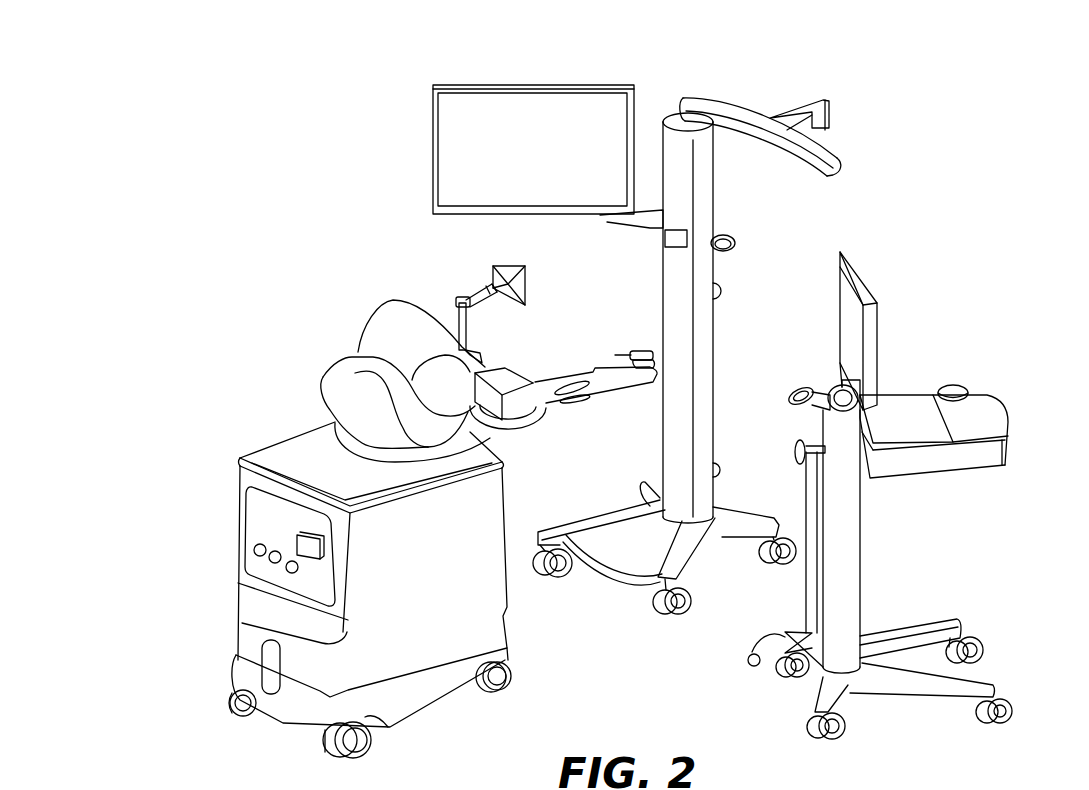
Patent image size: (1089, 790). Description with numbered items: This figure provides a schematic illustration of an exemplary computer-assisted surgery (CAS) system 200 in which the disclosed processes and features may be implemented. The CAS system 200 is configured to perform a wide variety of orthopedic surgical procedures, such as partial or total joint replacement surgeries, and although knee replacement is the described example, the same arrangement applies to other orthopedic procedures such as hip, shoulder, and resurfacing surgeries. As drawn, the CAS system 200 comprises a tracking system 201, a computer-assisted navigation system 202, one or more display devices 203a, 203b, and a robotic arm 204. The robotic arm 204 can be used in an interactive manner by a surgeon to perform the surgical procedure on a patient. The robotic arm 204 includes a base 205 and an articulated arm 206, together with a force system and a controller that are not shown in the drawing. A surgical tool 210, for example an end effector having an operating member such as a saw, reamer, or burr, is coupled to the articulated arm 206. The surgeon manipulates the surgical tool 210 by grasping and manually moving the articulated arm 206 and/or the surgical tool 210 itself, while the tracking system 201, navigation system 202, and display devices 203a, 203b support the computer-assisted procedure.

The computer-assisted surgery (CAS) system 200 is at (302, 104).
The tracking system 201 is at (746, 97).
The computer-assisted navigation system 202 is at (1006, 408).
The display device 203a is at (527, 84).
The display device 203b is at (870, 277).
The robotic arm 204 is at (239, 418).
The base 205 is at (505, 603).
The articulated arm 206 is at (568, 380).
The surgical tool 210 is at (633, 352).